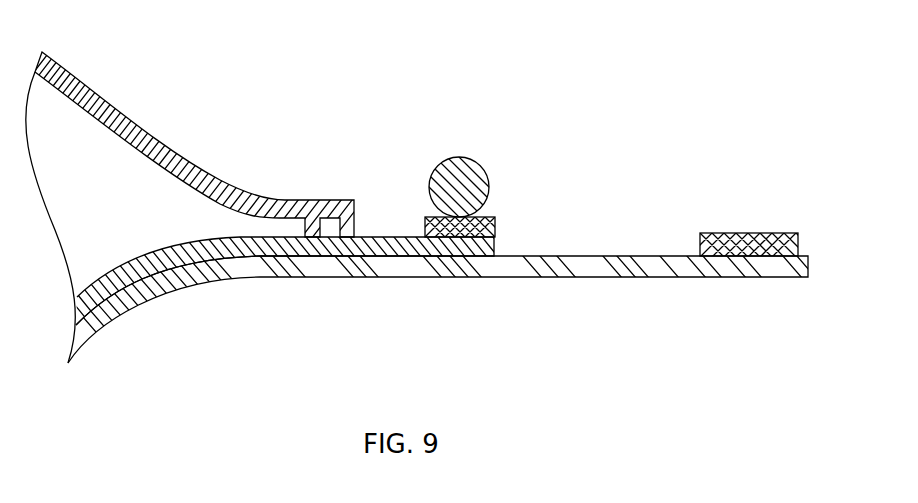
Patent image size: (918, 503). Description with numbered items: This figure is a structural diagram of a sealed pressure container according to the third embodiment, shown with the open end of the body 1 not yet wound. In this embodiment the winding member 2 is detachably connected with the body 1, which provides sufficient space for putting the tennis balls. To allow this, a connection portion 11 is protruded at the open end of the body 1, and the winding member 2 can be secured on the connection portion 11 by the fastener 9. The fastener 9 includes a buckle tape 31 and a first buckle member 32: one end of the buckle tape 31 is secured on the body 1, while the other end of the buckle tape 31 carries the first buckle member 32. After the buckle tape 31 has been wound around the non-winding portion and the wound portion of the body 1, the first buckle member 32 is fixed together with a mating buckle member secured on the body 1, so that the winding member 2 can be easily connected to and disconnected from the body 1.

The body 1 is at (138, 130).
The winding member 2 is at (460, 167).
The fastener 9 is at (495, 225).
The connection portion 11 is at (419, 248).
The buckle tape 31 is at (589, 266).
The first buckle member 32 is at (752, 233).